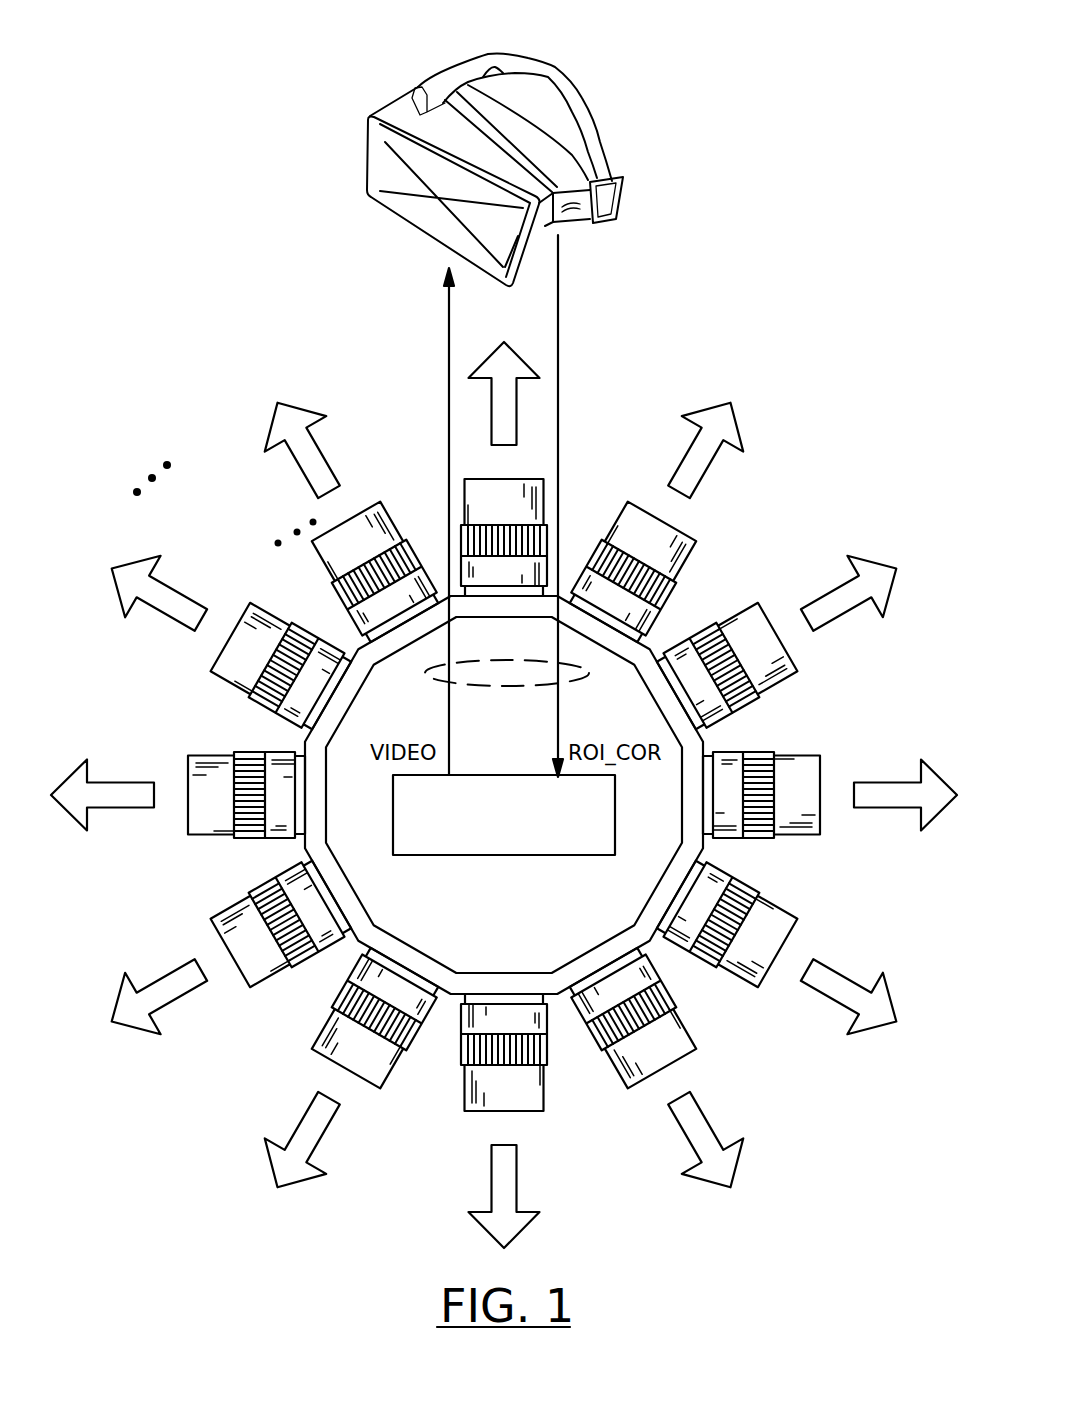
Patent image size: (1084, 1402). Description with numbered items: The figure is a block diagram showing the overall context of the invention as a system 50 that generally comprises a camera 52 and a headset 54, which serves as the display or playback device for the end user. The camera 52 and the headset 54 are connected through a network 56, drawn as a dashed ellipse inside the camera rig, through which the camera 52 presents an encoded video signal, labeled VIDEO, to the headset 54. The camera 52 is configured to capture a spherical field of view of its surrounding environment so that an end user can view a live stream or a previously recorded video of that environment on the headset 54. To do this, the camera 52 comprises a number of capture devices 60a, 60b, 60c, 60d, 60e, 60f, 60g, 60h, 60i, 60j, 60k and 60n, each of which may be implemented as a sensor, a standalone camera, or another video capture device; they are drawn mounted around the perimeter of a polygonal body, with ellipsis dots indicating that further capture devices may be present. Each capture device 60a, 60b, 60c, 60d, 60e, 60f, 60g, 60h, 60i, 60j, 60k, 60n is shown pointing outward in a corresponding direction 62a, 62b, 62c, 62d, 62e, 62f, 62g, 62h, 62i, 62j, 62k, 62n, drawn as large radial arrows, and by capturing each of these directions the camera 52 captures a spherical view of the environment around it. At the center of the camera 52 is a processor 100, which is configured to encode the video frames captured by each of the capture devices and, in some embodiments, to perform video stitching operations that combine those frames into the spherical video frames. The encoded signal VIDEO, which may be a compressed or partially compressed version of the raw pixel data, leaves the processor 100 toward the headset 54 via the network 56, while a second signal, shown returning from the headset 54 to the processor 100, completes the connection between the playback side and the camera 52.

The system 50 is at (236, 28).
The camera 52 is at (240, 303).
The headset 54 is at (372, 112).
The network 56 is at (516, 688).
The capture device 60a is at (480, 479).
The capture device 60b is at (632, 502).
The capture device 60c is at (760, 604).
The capture device 60d is at (812, 753).
The capture device 60e is at (797, 918).
The capture device 60f is at (697, 1050).
The capture device 60g is at (548, 1102).
The capture device 60h is at (312, 1050).
The capture device 60i is at (211, 918).
The capture device 60j is at (196, 753).
The capture device 60k is at (250, 603).
The capture device 60n is at (380, 500).
The direction 62a is at (494, 352).
The direction 62b is at (716, 408).
The direction 62c is at (873, 563).
The direction 62d is at (931, 766).
The direction 62e is at (876, 1027).
The direction 62f is at (700, 1181).
The direction 62g is at (530, 1222).
The direction 62h is at (306, 1180).
The direction 62i is at (132, 1027).
The direction 62j is at (75, 820).
The direction 62k is at (134, 562).
The direction 62n is at (328, 414).
The processor 100 is at (477, 856).